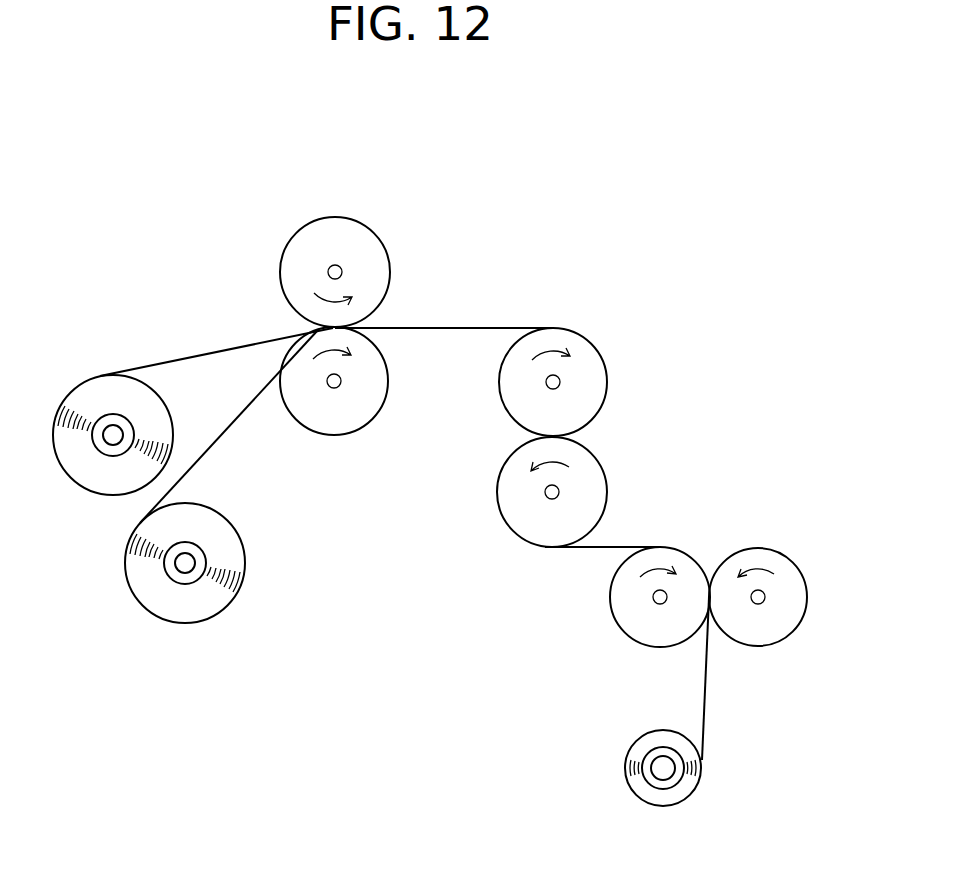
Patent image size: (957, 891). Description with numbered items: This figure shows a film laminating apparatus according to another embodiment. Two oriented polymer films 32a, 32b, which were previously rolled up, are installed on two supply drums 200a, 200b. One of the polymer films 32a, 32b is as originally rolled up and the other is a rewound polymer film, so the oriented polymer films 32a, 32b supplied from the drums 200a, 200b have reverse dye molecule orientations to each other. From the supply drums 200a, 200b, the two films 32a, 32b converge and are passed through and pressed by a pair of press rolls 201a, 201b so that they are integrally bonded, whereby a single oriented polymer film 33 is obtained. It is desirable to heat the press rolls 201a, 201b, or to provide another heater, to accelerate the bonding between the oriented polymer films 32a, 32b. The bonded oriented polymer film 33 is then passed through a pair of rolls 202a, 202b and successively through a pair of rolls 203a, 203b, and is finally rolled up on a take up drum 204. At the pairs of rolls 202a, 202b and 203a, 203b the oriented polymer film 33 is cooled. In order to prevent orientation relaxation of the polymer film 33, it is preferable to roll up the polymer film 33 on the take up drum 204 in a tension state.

The supply drum 200a is at (103, 415).
The supply drum 200b is at (197, 578).
The oriented polymer film 32a is at (172, 358).
The oriented polymer film 32b is at (212, 433).
The press roll 201a is at (395, 220).
The press roll 201b is at (340, 423).
The oriented polymer film 33 is at (460, 325).
The roll 202a is at (597, 372).
The roll 202b is at (515, 513).
The roll 203a is at (633, 625).
The roll 203b is at (793, 587).
The take up drum 204 is at (682, 785).